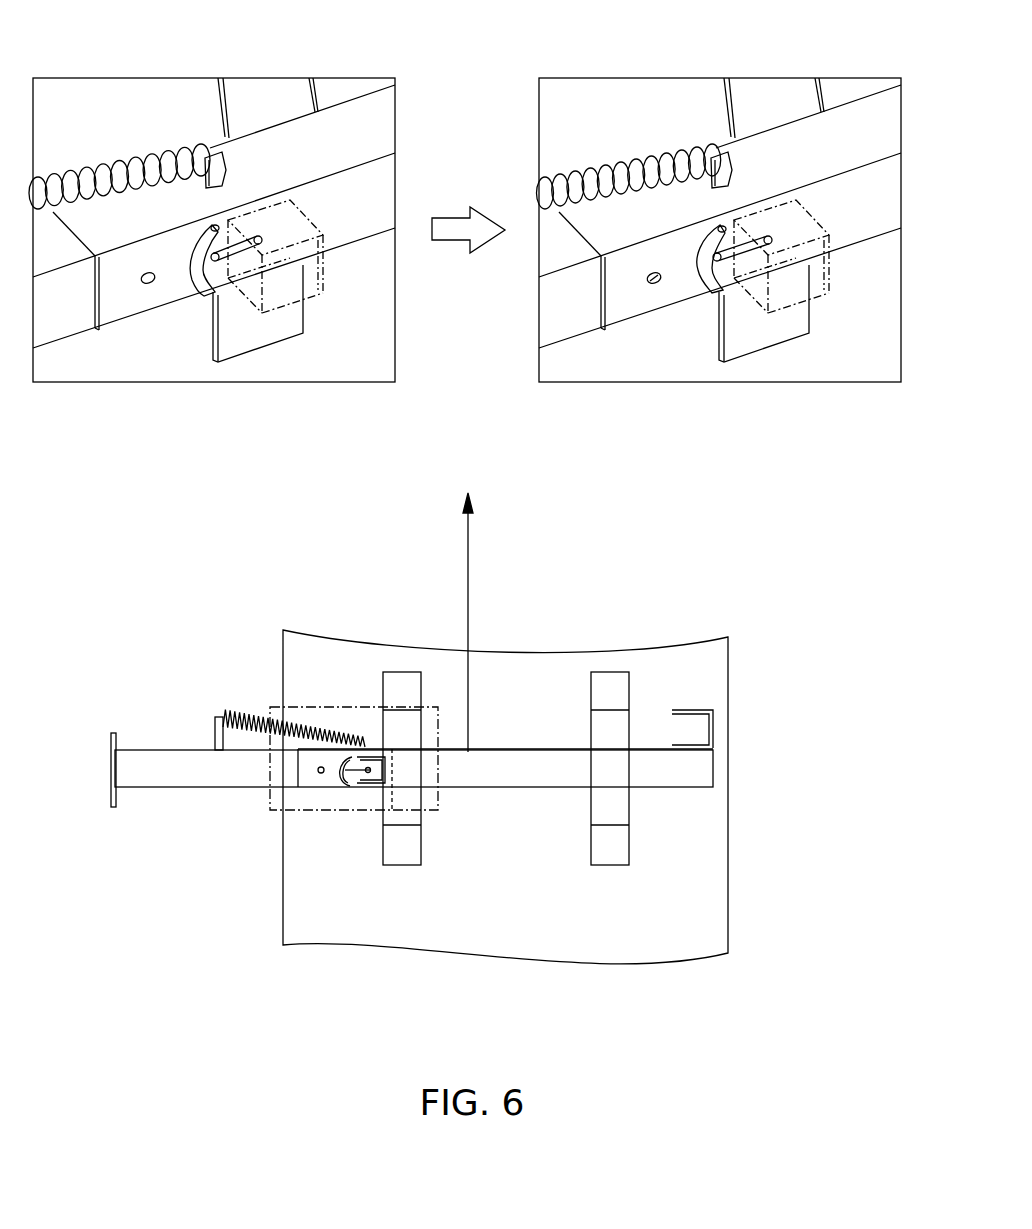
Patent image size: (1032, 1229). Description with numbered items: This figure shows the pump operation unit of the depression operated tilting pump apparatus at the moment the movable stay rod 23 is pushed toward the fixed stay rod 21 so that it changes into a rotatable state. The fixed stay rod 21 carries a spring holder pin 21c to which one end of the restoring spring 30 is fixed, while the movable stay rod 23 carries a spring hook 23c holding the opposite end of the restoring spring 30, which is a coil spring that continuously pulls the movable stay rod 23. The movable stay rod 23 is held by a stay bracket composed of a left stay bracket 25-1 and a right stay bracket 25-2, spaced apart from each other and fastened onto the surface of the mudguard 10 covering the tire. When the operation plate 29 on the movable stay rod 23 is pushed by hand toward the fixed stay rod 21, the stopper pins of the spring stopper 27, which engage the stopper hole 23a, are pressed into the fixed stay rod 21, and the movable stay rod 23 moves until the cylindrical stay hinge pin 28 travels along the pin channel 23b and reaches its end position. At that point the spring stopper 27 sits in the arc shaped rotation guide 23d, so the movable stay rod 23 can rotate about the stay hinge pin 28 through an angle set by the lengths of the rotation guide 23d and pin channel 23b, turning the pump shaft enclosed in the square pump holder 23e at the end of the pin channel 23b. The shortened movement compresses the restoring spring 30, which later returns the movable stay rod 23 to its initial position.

The mudguard 10 is at (695, 863).
The fixed stay rod 21 is at (62, 317).
The spring holder pin 21c is at (212, 727).
The movable stay rod 23 is at (280, 137).
The stopper hole 23a is at (657, 283).
The pin channel 23b is at (237, 255).
The spring hook 23c is at (207, 147).
The rotation guide 23d is at (207, 293).
The pump holder 23e is at (317, 300).
The left stay bracket 25-1 is at (400, 688).
The right stay bracket 25-2 is at (608, 687).
The spring stopper 27 is at (152, 283).
The stay hinge pin 28 is at (212, 262).
The operation plate 29 is at (715, 722).
The restoring spring 30 is at (98, 167).